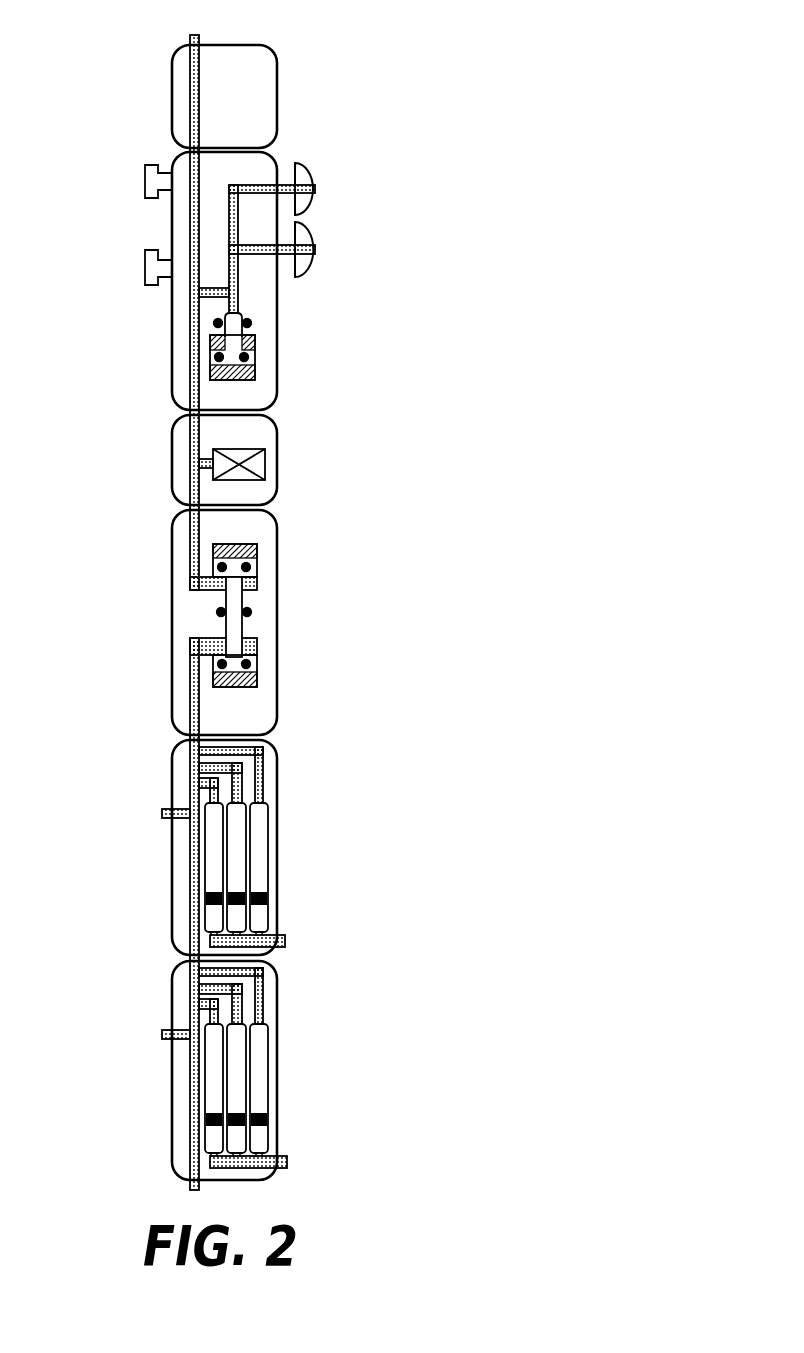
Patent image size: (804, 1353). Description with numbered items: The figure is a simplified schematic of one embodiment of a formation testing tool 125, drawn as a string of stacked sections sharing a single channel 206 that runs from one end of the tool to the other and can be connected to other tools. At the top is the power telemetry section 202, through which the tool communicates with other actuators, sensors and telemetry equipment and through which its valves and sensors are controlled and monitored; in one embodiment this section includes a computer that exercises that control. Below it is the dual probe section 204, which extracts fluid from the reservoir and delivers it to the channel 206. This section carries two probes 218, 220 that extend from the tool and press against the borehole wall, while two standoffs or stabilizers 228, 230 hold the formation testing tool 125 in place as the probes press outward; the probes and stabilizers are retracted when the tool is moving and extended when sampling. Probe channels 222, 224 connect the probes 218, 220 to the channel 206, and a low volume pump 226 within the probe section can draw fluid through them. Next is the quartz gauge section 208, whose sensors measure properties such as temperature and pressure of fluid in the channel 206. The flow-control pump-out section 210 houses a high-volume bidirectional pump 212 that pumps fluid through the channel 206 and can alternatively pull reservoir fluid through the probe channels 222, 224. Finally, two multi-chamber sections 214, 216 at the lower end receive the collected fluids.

The formation testing tool 125 is at (372, 38).
The power telemetry section 202 is at (172, 97).
The dual probe section 204 is at (172, 353).
The channel 206 is at (190, 405).
The quartz gauge section 208 is at (172, 457).
The flow-control pump-out section 210 is at (172, 692).
The high-volume bidirectional pump 212 is at (222, 612).
The multi-chamber section 214 is at (172, 778).
The multi-chamber section 216 is at (172, 998).
The probe 218 is at (307, 167).
The probe 220 is at (310, 237).
The probe channel 222 is at (258, 185).
The probe channel 224 is at (262, 254).
The low volume pump 226 is at (255, 352).
The stabilizer 228 is at (145, 185).
The stabilizer 230 is at (145, 270).